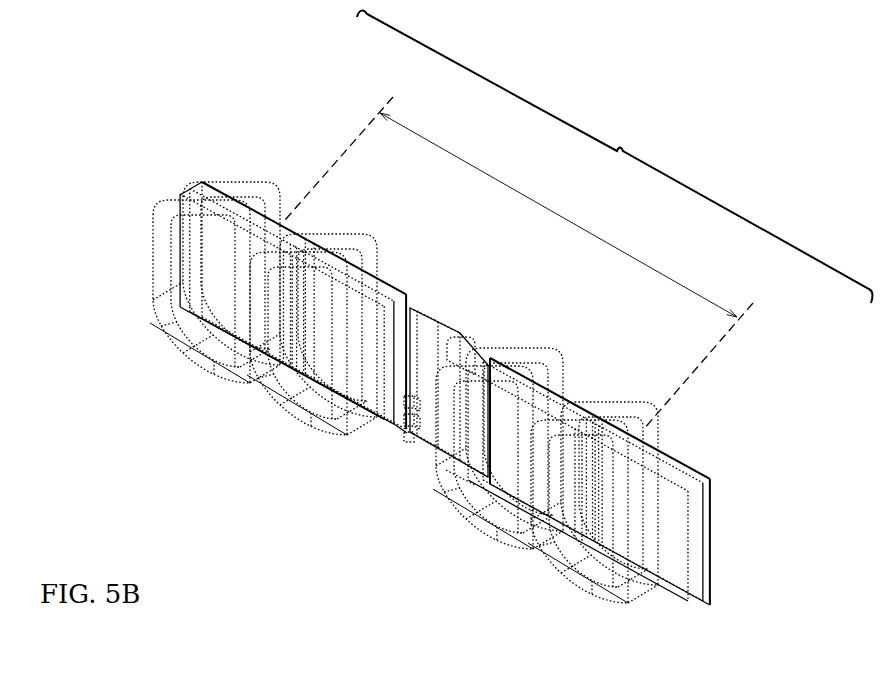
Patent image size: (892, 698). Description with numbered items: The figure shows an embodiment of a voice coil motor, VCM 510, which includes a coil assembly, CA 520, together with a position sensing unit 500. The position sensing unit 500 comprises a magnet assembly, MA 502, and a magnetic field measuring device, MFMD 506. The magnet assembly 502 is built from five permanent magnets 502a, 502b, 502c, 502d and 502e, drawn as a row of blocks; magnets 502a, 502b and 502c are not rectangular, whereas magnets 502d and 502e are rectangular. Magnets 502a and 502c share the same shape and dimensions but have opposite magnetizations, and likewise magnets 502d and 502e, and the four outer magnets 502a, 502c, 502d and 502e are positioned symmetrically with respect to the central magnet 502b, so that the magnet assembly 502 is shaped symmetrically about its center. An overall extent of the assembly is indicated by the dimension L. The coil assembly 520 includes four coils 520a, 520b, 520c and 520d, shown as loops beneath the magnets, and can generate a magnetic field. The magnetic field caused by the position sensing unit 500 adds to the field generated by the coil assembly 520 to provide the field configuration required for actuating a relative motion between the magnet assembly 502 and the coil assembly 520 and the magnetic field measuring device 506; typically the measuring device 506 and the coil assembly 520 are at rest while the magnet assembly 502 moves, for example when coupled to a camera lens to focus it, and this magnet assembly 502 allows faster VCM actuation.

The position sensing unit 500 is at (690, 140).
The voice coil motor 510 is at (60, 65).
The magnet assembly 502 is at (537, 300).
The permanent magnet 502a is at (316, 243).
The permanent magnet 502b is at (457, 315).
The permanent magnet 502c is at (564, 372).
The permanent magnet 502d is at (233, 184).
The permanent magnet 502e is at (690, 441).
The magnetic field measuring device 506 is at (410, 443).
The coil assembly 520 is at (462, 550).
The coil 520a is at (213, 380).
The coil 520b is at (309, 432).
The coil 520c is at (537, 553).
The coil 520d is at (651, 614).
The length L is at (694, 268).